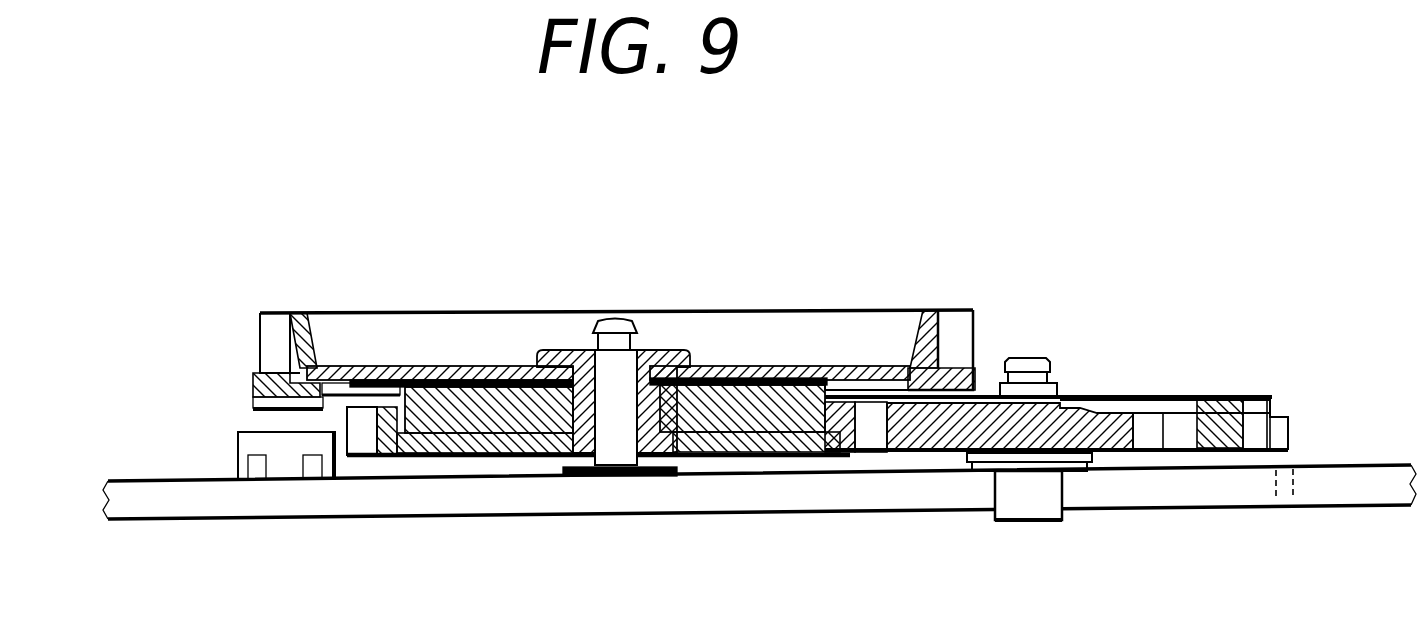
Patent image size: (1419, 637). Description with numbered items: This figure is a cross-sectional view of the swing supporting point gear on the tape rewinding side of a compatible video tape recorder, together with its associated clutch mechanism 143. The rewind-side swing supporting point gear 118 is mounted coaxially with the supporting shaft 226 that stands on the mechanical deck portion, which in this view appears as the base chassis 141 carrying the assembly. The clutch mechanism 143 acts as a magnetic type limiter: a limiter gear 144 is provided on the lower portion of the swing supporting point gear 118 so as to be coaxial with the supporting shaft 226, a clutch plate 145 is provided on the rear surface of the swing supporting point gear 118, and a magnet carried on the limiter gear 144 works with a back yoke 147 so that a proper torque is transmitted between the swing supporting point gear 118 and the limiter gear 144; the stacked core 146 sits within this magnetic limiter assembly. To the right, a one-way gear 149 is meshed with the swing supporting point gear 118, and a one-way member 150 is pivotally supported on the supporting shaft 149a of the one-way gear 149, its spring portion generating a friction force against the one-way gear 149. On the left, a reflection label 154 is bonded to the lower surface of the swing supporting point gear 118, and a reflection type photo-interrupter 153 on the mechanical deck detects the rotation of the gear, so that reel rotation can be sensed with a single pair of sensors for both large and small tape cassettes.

The rewind-side swing supporting point gear 118 is at (837, 311).
The base chassis 141 is at (1343, 467).
The clutch mechanism 143 is at (470, 354).
The limiter gear 144 is at (368, 440).
The clutch plate 145 is at (393, 366).
The stator core 146 is at (483, 430).
The back yoke 147 is at (522, 436).
The one-way gear 149 is at (1097, 432).
The supporting shaft 149a is at (1013, 360).
The one-way member 150 is at (1155, 401).
The reflection type photo-interrupter 153 is at (237, 453).
The reflection label 154 is at (253, 411).
The supporting shaft 226 is at (610, 322).